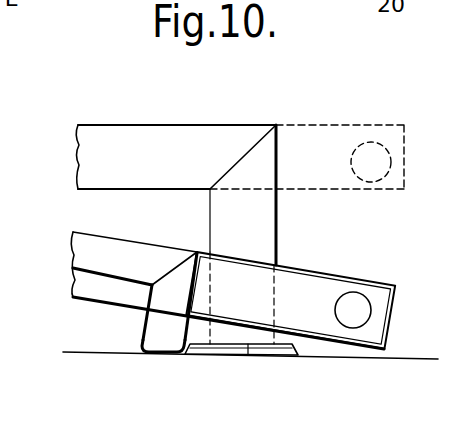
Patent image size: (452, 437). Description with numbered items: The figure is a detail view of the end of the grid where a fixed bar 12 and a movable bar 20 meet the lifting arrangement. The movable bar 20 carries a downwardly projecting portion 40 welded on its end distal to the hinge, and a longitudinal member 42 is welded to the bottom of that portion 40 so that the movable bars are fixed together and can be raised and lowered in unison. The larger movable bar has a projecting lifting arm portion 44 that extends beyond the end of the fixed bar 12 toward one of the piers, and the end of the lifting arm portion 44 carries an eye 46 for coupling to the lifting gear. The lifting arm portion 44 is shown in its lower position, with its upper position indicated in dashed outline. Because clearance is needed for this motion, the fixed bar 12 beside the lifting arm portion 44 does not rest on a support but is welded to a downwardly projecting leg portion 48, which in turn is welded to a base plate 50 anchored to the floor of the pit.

The fixed bar 12 is at (205, 143).
The movable bar 20 is at (95, 253).
The downwardly projecting portion 40 is at (160, 300).
The longitudinal member 42 is at (155, 354).
The lifting arm portion 44 is at (328, 346).
The eye 46 is at (371, 310).
The downwardly projecting leg portion 48 is at (277, 228).
The base plate 50 is at (252, 357).